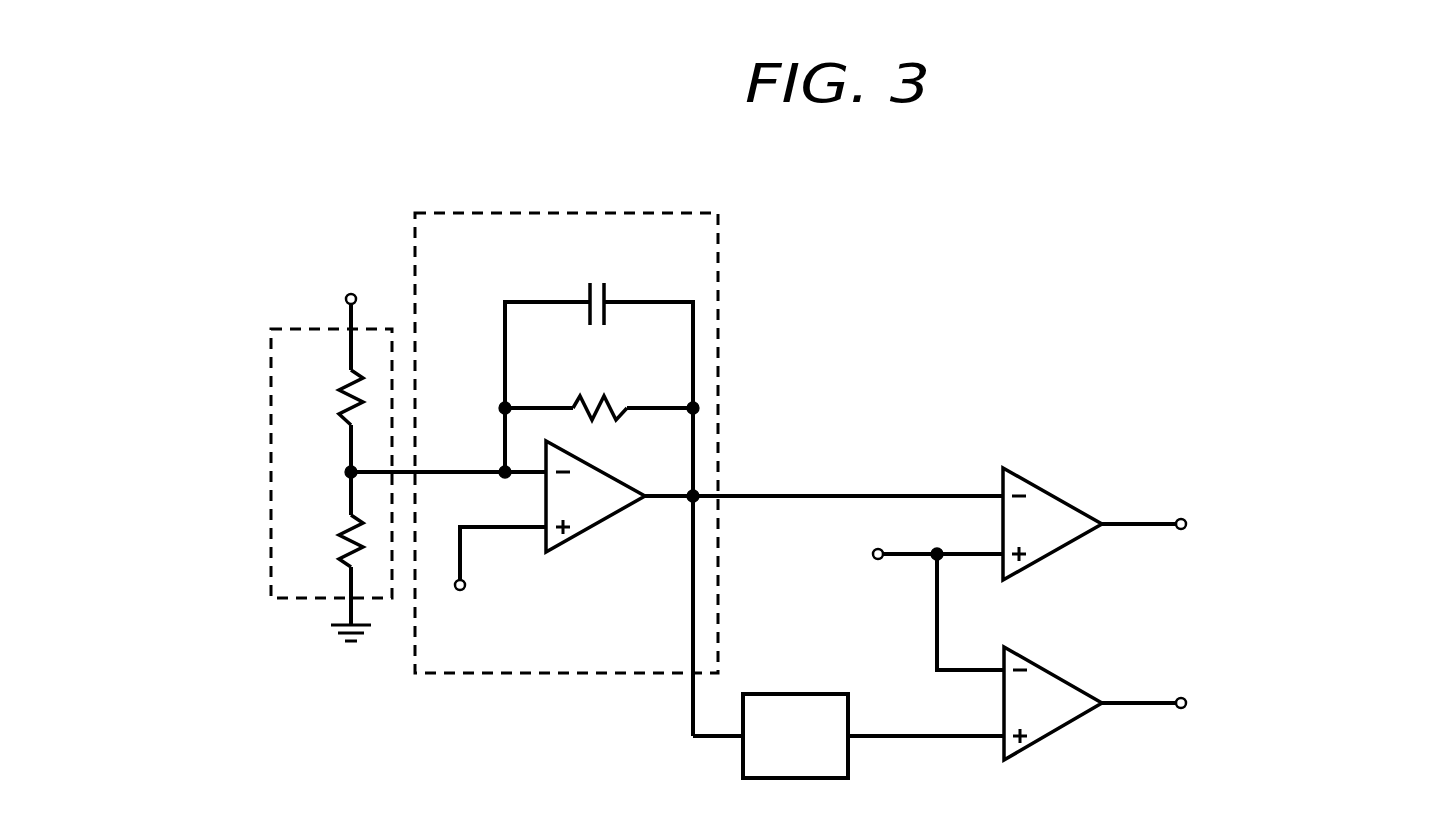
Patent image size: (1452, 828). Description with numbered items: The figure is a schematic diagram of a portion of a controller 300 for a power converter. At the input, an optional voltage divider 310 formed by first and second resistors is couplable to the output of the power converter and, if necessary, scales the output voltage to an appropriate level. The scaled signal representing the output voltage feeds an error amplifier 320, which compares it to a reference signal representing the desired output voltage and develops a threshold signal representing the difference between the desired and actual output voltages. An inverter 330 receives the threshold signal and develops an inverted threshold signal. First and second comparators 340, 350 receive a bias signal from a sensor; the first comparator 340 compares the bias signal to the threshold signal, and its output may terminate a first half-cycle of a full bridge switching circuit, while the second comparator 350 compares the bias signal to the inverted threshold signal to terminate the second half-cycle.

The controller 300 is at (243, 158).
The voltage divider 310 is at (271, 345).
The error amplifier 320 is at (440, 213).
The inverter 330 is at (797, 694).
The first comparator 340 is at (1057, 496).
The second comparator 350 is at (1057, 672).